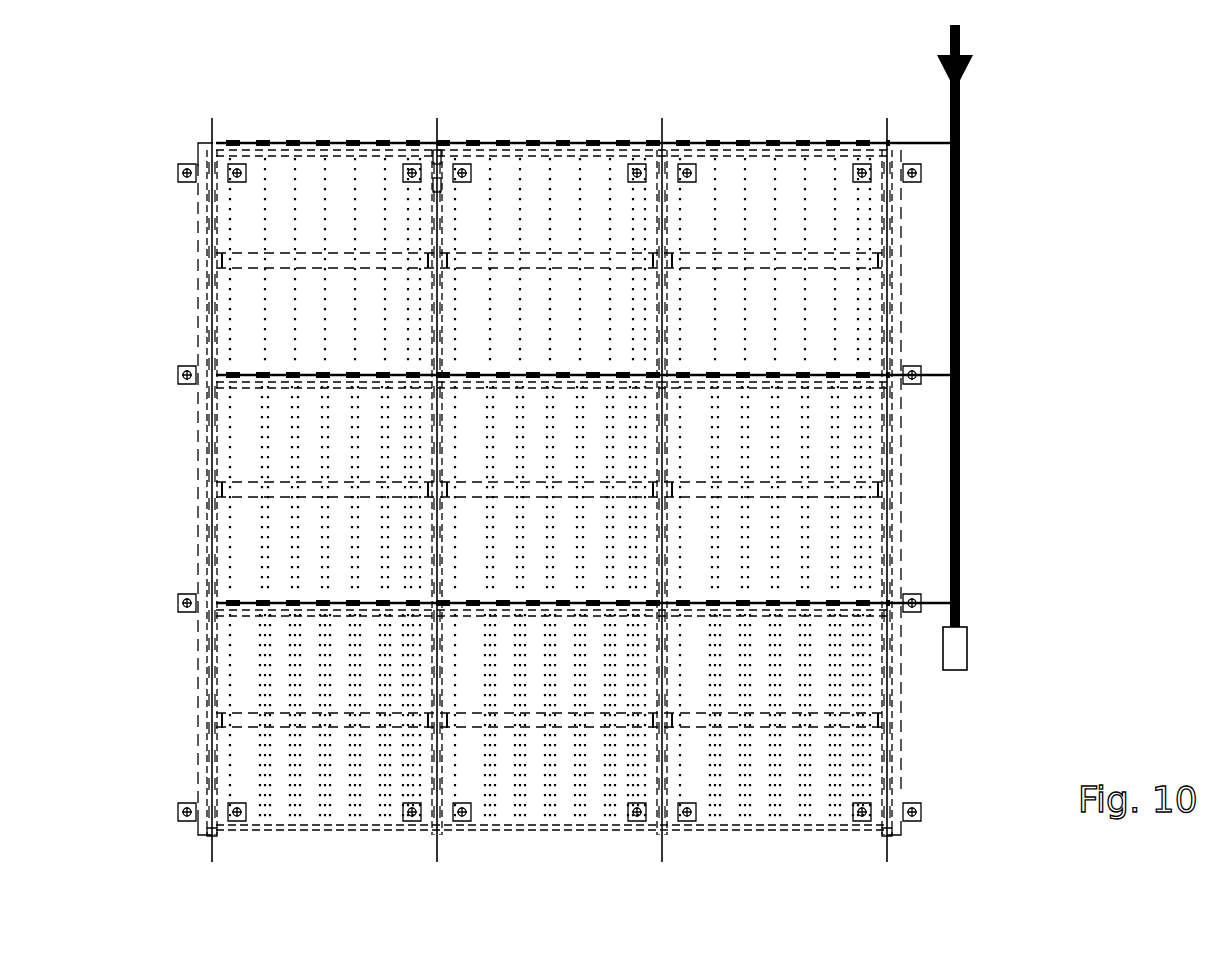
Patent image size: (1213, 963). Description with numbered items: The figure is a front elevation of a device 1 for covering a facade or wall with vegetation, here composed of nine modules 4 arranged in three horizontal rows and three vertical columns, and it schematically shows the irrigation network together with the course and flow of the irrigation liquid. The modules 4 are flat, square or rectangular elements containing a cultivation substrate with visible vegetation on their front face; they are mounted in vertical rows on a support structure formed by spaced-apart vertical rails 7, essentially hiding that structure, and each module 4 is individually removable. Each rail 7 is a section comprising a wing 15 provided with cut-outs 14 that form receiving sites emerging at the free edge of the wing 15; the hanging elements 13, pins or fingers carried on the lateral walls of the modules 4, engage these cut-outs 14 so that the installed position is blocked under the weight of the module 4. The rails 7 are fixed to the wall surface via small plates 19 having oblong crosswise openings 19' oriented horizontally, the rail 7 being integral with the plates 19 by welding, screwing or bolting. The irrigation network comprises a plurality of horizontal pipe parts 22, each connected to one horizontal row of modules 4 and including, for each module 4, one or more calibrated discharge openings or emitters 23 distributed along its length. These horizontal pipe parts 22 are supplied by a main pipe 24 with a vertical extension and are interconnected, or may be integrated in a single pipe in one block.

The device for covering facades or walls with vegetation 1 is at (122, 870).
The module 4 is at (207, 661).
The vertical rail 7 is at (203, 836).
The hanging element 13 is at (436, 160).
The cut-out 14 is at (438, 190).
The wing 15 is at (214, 835).
The small plate 19 is at (549, 497).
The oblong crosswise opening 19' is at (945, 832).
The horizontal pipe part 22 is at (735, 143).
The emitter 23 is at (780, 143).
The main pipe 24 is at (963, 300).